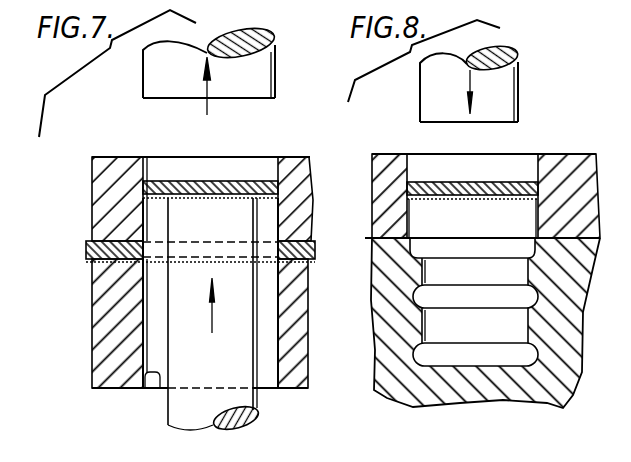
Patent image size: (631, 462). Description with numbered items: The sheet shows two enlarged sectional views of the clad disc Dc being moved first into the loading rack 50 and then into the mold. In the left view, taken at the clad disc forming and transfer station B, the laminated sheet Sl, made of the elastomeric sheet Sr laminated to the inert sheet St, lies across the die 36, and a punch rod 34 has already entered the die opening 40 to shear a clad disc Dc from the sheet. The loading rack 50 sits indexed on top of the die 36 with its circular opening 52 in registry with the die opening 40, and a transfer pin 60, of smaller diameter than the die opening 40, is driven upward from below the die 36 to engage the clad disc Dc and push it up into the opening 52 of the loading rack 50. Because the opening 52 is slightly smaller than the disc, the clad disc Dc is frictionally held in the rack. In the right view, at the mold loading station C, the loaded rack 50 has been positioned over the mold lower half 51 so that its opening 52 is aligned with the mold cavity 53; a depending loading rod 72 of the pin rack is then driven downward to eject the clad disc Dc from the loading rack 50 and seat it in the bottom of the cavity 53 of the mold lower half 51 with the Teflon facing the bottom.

In FIG. 7, the punch rod 34 is at (155, 70).
In FIG. 8, the loading rod 72 is at (520, 88).
In FIG. 7, the loading rack 50 is at (94, 159).
In FIG. 8, the loading rack 50 is at (583, 152).
In FIG. 7, the circular opening 52 is at (146, 181).
In FIG. 8, the circular opening 52 is at (418, 182).
In FIG. 7, the clad disc Dc is at (234, 182).
In FIG. 8, the clad disc Dc is at (508, 182).
In FIG. 7, the clad disc forming and transfer station B is at (86, 211).
In FIG. 8, the mold loading station C is at (385, 146).
In FIG. 7, the laminated sheet Sl is at (87, 250).
In FIG. 7, the elastomeric sheet Sr is at (315, 241).
In FIG. 7, the inert material sheet St is at (91, 263).
In FIG. 7, the die 36 is at (115, 347).
In FIG. 7, the die opening 40 is at (153, 390).
In FIG. 7, the transfer pin 60 is at (250, 398).
In FIG. 8, the mold cavity 53 is at (424, 322).
In FIG. 8, the mold lower half 51 is at (412, 391).